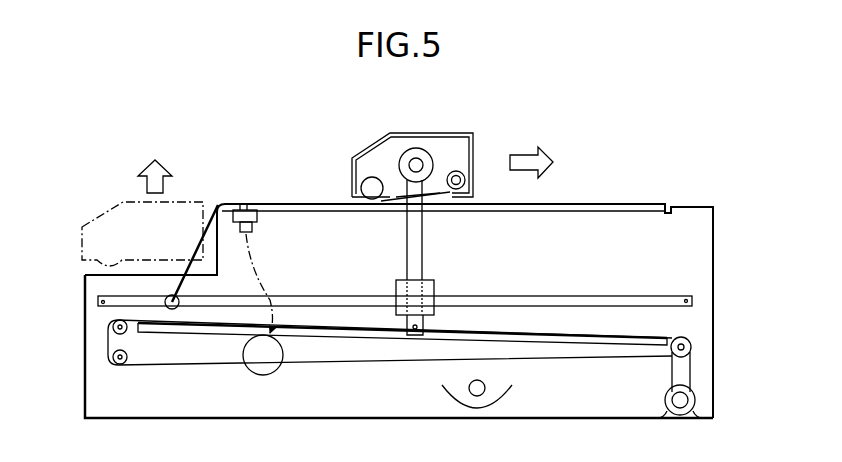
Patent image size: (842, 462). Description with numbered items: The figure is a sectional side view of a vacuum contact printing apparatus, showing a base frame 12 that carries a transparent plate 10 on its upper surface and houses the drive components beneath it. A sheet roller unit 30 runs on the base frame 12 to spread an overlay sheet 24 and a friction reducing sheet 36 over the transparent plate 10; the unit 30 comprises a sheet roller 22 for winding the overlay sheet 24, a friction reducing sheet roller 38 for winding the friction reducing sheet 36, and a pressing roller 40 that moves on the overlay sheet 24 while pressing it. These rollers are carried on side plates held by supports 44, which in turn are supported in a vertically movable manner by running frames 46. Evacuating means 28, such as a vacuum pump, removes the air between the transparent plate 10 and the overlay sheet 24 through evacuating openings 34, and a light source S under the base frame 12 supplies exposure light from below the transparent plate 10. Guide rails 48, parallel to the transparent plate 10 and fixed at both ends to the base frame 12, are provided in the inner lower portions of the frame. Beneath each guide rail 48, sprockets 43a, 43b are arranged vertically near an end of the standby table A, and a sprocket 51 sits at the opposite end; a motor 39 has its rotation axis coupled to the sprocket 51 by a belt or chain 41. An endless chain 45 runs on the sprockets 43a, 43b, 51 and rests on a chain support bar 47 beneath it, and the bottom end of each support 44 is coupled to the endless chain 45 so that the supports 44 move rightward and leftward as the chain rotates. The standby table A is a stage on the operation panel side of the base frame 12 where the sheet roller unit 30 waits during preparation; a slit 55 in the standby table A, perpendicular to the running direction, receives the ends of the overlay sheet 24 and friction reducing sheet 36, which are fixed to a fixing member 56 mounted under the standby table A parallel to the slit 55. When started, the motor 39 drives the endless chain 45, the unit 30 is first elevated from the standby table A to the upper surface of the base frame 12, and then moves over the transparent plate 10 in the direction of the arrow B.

The transparent plate 10 is at (607, 208).
The base frame 12 is at (693, 204).
The sheet roller 22 is at (424, 149).
The overlay sheet 24 is at (395, 190).
The evacuating means 28 is at (255, 377).
The sheet roller unit 30 is at (104, 203).
The evacuating openings 34 is at (257, 223).
The friction reducing sheet 36 is at (438, 205).
The friction reducing sheet roller 38 is at (457, 170).
The motor 39 is at (696, 392).
The pressing roller 40 is at (362, 178).
The belt or chain 41 is at (691, 367).
The sprocket 43a is at (127, 332).
The sprocket 43b is at (129, 361).
The supports 44 is at (407, 263).
The endless chain 45 is at (633, 336).
The running frames 46 is at (433, 282).
The chain support bar 47 is at (571, 337).
The guide rails 48 is at (577, 294).
The sprocket 51 is at (690, 342).
The slit 55 is at (188, 270).
The fixing member 56 is at (180, 298).
The standby table A is at (145, 272).
The direction of movement B is at (521, 152).
The light source S is at (487, 384).